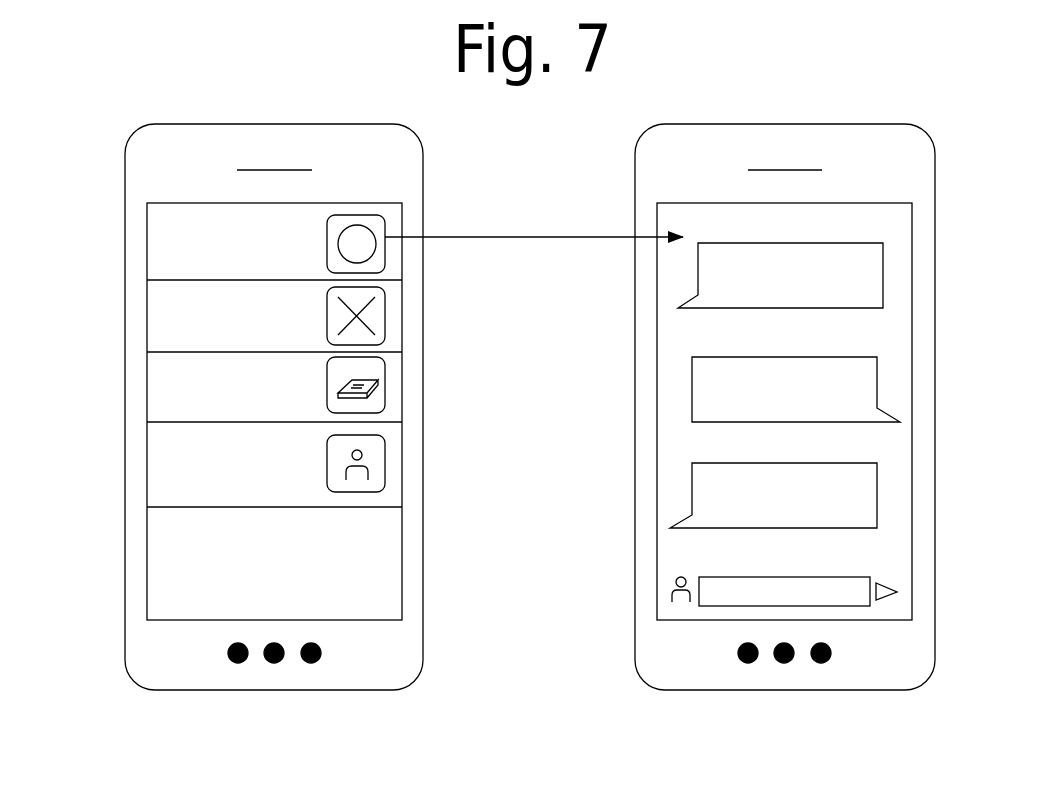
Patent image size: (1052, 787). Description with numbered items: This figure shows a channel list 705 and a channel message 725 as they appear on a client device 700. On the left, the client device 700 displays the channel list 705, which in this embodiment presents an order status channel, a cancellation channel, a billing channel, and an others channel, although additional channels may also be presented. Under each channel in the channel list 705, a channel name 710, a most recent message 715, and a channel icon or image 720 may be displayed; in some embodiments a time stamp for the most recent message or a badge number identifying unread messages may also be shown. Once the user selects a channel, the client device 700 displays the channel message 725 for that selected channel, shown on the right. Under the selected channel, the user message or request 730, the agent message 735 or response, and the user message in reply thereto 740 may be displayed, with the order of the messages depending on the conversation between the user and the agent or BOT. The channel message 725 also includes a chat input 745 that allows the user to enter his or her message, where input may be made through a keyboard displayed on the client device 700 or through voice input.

The client device 700 is at (125, 528).
The channel list 705 is at (218, 195).
The channel name 710 is at (157, 223).
The most recent message 715 is at (190, 260).
The channel icon or image 720 is at (375, 215).
The channel message 725 is at (870, 197).
The user message or request 730 is at (698, 277).
The agent message 735 is at (692, 375).
The user message in reply 740 is at (692, 492).
The chat input 745 is at (672, 588).